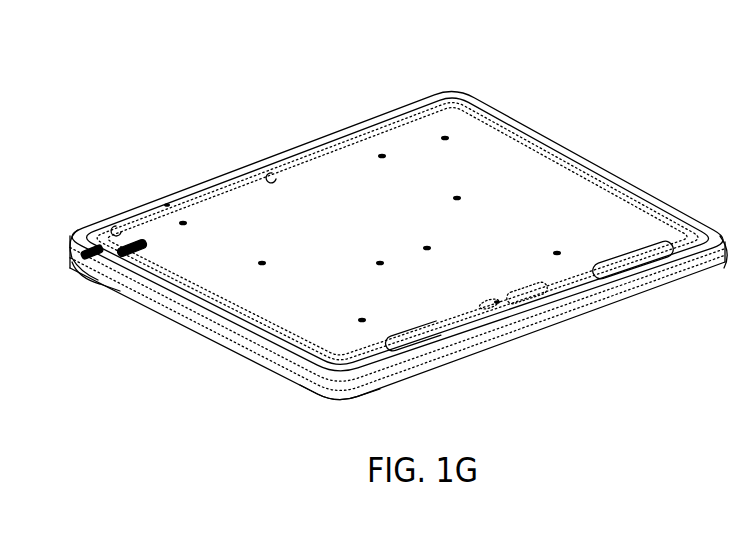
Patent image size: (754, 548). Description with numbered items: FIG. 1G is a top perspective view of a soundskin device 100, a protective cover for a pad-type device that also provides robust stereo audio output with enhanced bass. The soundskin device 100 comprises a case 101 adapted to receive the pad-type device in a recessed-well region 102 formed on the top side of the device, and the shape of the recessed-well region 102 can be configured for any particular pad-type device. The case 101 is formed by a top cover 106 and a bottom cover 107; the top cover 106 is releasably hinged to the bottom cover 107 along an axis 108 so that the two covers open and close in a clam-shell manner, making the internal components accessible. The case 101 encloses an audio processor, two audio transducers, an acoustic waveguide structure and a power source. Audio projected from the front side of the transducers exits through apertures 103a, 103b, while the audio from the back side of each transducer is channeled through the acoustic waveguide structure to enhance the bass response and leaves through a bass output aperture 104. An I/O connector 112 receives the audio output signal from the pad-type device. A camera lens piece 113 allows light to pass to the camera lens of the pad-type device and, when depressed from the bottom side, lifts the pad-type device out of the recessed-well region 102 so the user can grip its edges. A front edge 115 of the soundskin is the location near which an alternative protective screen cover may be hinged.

The soundskin device 100 is at (210, 130).
The case 101 is at (538, 133).
The recessed-well region 102 is at (427, 157).
The aperture 103a is at (400, 338).
The aperture 103b is at (635, 263).
The bass output aperture 104 is at (520, 305).
The top cover 106 is at (233, 323).
The bottom cover 107 is at (288, 373).
The axis 108 is at (525, 78).
The I/O connector 112 is at (577, 161).
The camera lens piece 113 is at (125, 240).
The front edge 115 is at (382, 386).